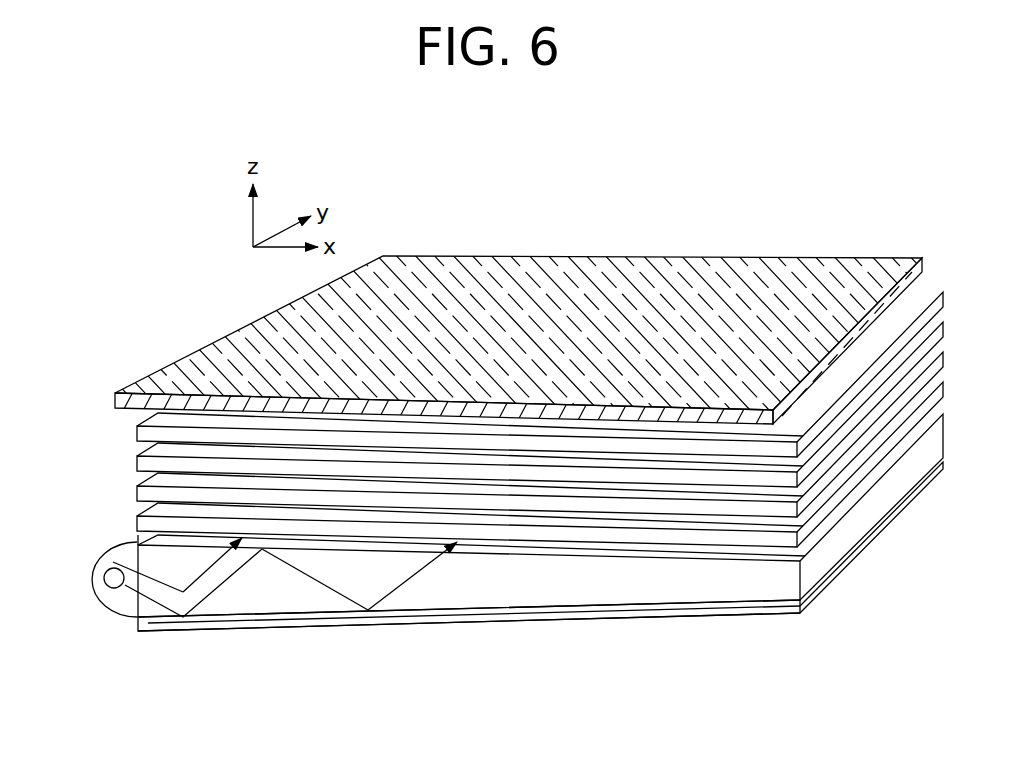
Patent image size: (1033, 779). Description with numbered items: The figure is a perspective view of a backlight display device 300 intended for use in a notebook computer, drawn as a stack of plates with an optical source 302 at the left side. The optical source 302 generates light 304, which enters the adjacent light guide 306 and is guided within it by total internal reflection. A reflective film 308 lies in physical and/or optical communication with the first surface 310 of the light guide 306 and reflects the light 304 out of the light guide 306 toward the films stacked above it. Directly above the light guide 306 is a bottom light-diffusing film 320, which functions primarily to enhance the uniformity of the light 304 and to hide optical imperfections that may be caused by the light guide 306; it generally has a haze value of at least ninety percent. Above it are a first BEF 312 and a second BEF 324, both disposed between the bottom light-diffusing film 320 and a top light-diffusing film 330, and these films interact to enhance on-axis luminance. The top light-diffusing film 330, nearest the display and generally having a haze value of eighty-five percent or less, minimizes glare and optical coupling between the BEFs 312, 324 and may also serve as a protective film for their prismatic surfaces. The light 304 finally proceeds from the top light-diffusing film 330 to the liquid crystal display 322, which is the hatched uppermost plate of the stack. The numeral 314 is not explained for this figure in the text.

The backlight display device 300 is at (172, 278).
The optical source 302 is at (113, 588).
The light 304 is at (337, 592).
The light guide 306 is at (295, 592).
The reflective film 308 is at (751, 620).
The first surface 310 is at (549, 624).
The first BEF 312 is at (137, 492).
The light guide 314 is at (140, 537).
The bottom light-diffusing film 320 is at (137, 522).
The liquid crystal display 322 is at (852, 257).
The second BEF 324 is at (137, 462).
The top light-diffusing film 330 is at (137, 432).